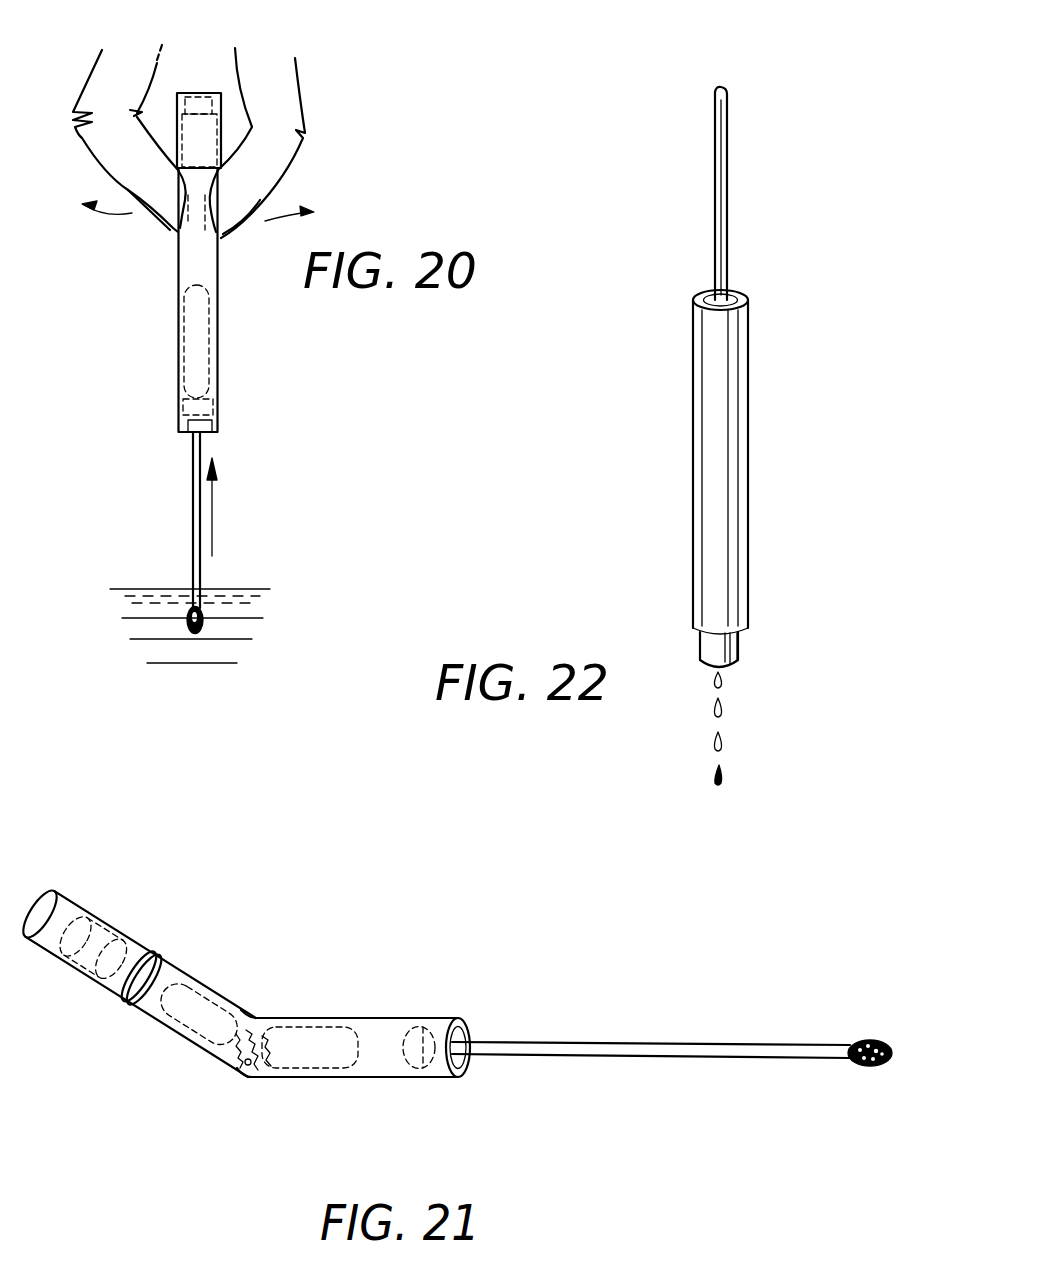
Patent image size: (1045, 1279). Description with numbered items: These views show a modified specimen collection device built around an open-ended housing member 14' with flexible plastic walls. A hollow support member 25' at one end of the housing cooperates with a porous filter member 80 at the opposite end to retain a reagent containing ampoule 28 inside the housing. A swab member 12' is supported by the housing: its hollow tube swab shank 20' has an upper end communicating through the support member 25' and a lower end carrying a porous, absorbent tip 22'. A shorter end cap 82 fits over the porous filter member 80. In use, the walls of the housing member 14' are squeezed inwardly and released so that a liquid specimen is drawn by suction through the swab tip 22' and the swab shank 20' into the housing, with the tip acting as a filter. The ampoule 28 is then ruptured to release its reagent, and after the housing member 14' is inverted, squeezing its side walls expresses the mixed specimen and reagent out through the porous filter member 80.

In FIG. 20, the end cap 82 is at (198, 93).
In FIG. 21, the end cap 82 is at (73, 905).
In FIG. 20, the porous filter member 80 is at (233, 97).
In FIG. 22, the porous filter member 80 is at (742, 648).
In FIG. 21, the porous filter member 80 is at (125, 930).
In FIG. 20, the housing member 14' is at (235, 300).
In FIG. 22, the housing member 14' is at (750, 462).
In FIG. 21, the housing member 14' is at (243, 1011).
In FIG. 20, the hollow support member 25' is at (237, 396).
In FIG. 21, the hollow support member 25' is at (431, 1021).
In FIG. 20, the swab member 12' is at (242, 520).
In FIG. 21, the swab member 12' is at (651, 1022).
In FIG. 20, the hollow tube swab shank 20' is at (157, 567).
In FIG. 22, the hollow tube swab shank 20' is at (752, 193).
In FIG. 20, the porous absorbent tip 22' is at (251, 615).
In FIG. 21, the porous absorbent tip 22' is at (870, 1026).
In FIG. 21, the reagent containing ampoule 28 is at (293, 1018).